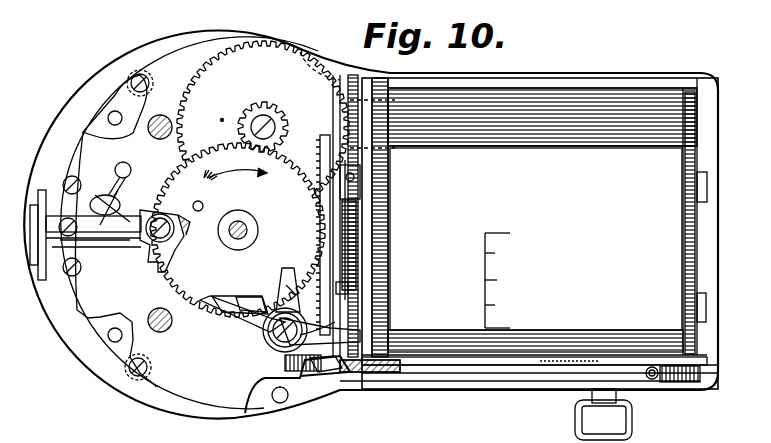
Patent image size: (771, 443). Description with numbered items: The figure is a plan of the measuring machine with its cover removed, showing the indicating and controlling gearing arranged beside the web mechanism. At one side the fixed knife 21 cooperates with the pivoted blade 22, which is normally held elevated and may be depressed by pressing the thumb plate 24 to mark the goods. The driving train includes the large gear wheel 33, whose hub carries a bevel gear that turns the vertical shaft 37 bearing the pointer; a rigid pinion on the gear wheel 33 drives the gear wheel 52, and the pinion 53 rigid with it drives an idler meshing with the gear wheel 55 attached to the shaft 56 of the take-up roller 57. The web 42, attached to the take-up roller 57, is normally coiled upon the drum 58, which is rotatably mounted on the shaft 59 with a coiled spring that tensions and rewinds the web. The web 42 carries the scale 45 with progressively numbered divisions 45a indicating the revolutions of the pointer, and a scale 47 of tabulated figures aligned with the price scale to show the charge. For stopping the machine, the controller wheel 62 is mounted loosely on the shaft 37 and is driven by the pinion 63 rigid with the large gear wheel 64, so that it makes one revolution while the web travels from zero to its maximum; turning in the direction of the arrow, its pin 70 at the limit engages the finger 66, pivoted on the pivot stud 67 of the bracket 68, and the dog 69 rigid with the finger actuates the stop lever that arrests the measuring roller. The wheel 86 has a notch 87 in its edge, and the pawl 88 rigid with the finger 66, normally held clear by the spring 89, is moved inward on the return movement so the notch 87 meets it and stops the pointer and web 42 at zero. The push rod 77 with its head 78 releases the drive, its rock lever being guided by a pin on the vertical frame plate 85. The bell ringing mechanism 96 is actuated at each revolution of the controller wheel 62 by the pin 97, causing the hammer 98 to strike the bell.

The fixed knife 21 is at (482, 372).
The pivoted blade 22 is at (519, 384).
The thumb plate 24 is at (584, 420).
The large gear wheel 33 is at (320, 214).
The vertical shaft 37 is at (244, 220).
The web 42 is at (536, 244).
The scale 45 is at (480, 254).
The divisions 45a is at (482, 282).
The scale of tabulated figures 47 is at (624, 262).
The gear wheel 52 is at (340, 282).
The pinion 53 is at (350, 246).
The gear wheel 55 is at (362, 212).
The shaft 56 is at (708, 186).
The take-up roller 57 is at (695, 156).
The drum 58 is at (695, 282).
The shaft 59 is at (706, 308).
The controller wheel 62 is at (235, 243).
The pinion 63 is at (264, 112).
The large gear wheel 64 is at (286, 127).
The finger 66 is at (288, 270).
The pivot stud 67 is at (270, 344).
The bracket 68 is at (300, 332).
The dog 69 is at (322, 372).
The pin 70 is at (282, 290).
The push rod 77 is at (44, 248).
The head 78 is at (40, 200).
The vertical frame plate 85 is at (386, 372).
The wheel 86 is at (256, 307).
The notch 87 is at (232, 302).
The pawl 88 is at (250, 322).
The spring 89 is at (294, 382).
The bell ringing mechanism 96 is at (160, 214).
The pin 97 is at (195, 204).
The hammer 98 is at (120, 167).